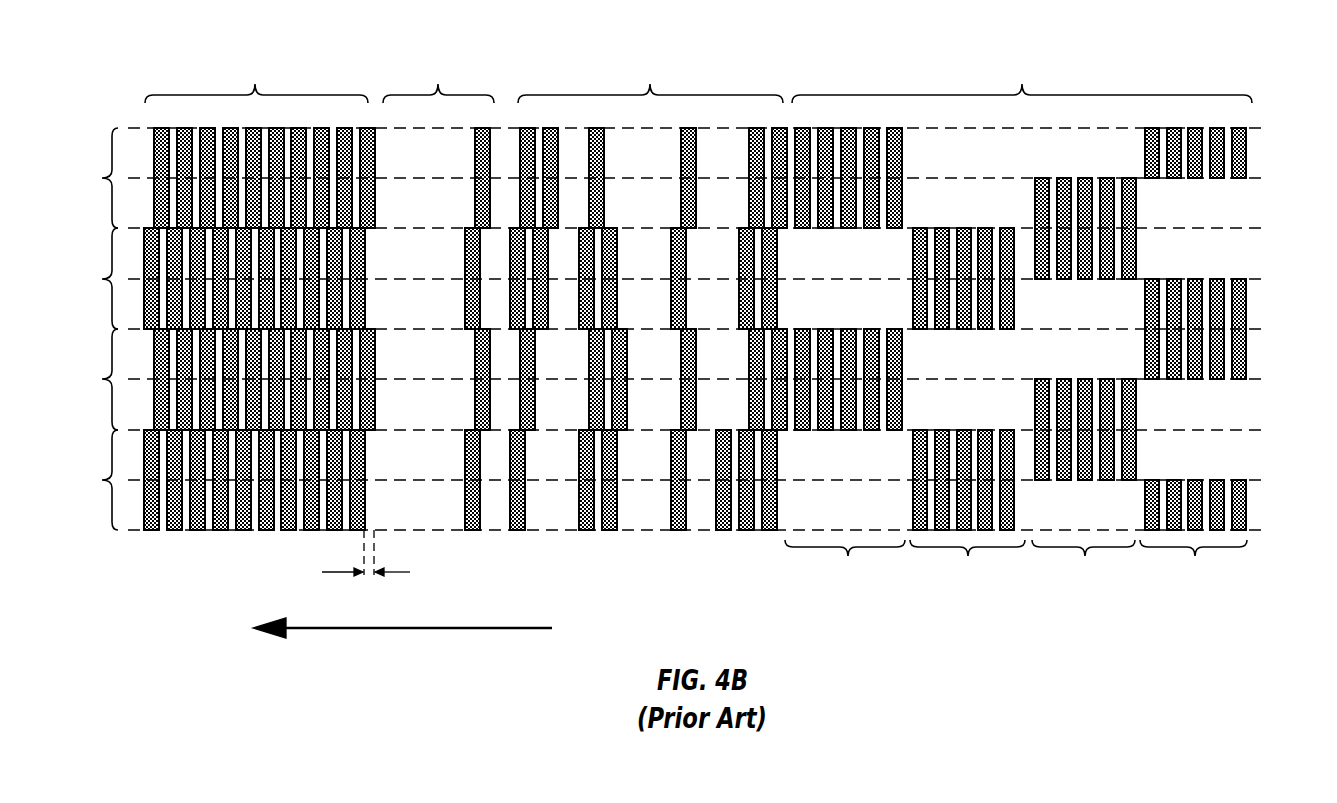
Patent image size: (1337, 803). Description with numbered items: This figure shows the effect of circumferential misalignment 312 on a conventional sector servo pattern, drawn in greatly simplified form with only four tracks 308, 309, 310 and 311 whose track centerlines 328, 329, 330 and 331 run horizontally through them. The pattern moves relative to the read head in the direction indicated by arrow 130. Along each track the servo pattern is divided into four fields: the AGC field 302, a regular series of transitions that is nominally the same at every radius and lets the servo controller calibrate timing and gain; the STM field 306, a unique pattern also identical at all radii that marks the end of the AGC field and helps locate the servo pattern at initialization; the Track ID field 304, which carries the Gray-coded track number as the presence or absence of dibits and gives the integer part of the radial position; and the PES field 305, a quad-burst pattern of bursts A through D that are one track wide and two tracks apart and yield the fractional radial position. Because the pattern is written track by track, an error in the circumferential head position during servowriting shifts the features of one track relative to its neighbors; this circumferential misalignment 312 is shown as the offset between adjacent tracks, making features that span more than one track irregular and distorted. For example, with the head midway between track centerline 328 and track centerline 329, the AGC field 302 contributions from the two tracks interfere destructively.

The AGC field 302 is at (170, 97).
The STM field 306 is at (401, 97).
The Track ID field 304 is at (559, 97).
The PES field 305 is at (1047, 319).
The track 308 is at (658, 178).
The track 309 is at (658, 278).
The track 310 is at (658, 379).
The track 311 is at (658, 480).
The circumferential misalignment 312 is at (366, 580).
The arrow 130 is at (375, 633).
The track centerline 328 is at (1256, 180).
The track centerline 329 is at (1256, 281).
The track centerline 330 is at (1256, 381).
The track centerline 331 is at (1256, 482).